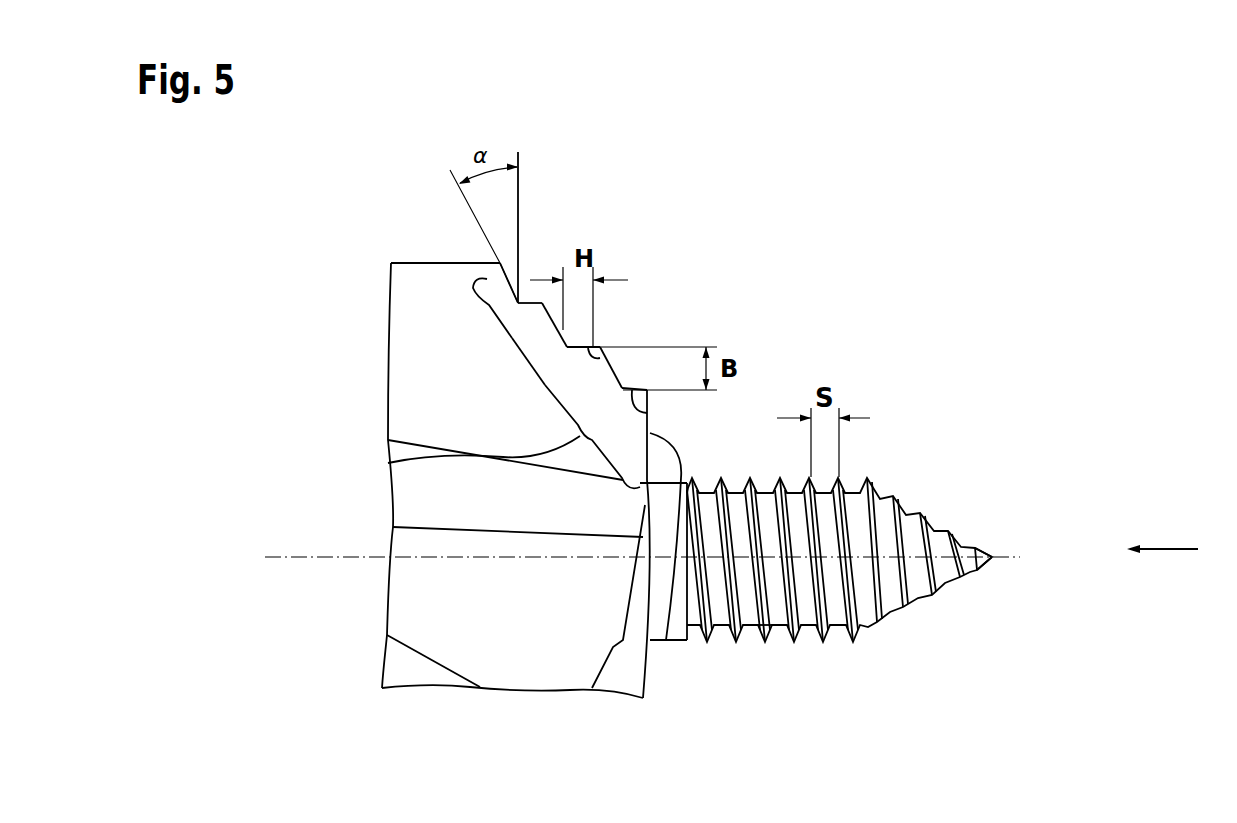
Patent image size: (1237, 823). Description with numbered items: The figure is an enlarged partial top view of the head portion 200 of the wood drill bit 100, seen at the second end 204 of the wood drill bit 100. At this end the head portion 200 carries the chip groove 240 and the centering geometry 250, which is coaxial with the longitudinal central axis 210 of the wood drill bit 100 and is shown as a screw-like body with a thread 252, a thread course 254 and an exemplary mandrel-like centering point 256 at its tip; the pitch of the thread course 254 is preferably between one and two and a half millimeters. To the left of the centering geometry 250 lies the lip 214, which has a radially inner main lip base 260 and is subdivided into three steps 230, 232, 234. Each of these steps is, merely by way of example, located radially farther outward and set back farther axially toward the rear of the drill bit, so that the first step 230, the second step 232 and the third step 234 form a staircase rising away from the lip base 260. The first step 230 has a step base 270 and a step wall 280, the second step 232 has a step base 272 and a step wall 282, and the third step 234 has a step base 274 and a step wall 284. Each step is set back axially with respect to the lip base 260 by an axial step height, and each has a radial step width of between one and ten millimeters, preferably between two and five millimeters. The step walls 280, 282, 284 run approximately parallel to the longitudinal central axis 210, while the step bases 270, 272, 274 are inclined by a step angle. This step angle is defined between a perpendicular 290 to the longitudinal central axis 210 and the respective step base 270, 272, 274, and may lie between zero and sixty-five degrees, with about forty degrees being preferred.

The wood drill bit 100 is at (450, 405).
The head portion 200 is at (328, 181).
The second end 204 is at (1176, 549).
The longitudinal central axis 210 is at (1015, 558).
The lip 214 is at (390, 463).
The first step 230 is at (583, 380).
The second step 232 is at (540, 337).
The third step 234 is at (492, 292).
The chip groove 240 is at (425, 331).
The centering geometry 250 is at (888, 488).
The thread 252 is at (770, 627).
The thread course 254 is at (840, 627).
The centering point 256 is at (981, 568).
The lip base 260 is at (667, 617).
The step base 270 is at (611, 374).
The step base 272 is at (569, 311).
The step base 274 is at (487, 279).
The step wall 280 is at (648, 413).
The step wall 282 is at (598, 356).
The step wall 284 is at (525, 297).
The perpendicular 290 is at (519, 188).